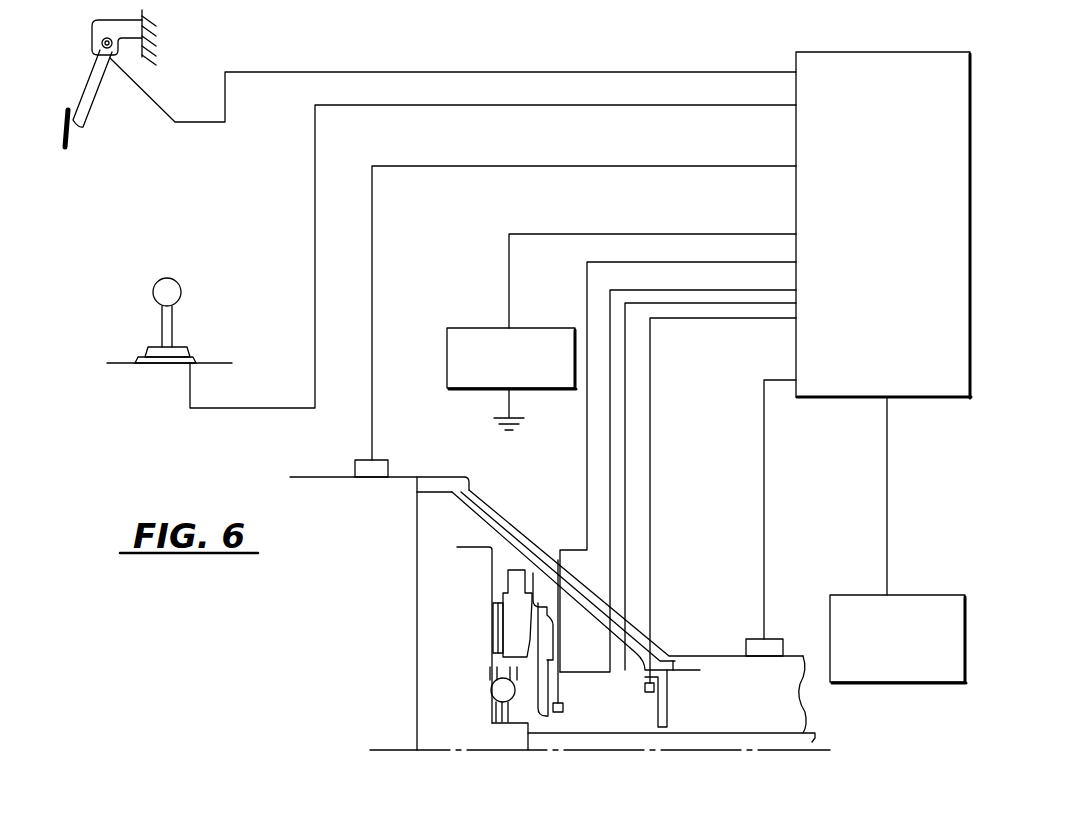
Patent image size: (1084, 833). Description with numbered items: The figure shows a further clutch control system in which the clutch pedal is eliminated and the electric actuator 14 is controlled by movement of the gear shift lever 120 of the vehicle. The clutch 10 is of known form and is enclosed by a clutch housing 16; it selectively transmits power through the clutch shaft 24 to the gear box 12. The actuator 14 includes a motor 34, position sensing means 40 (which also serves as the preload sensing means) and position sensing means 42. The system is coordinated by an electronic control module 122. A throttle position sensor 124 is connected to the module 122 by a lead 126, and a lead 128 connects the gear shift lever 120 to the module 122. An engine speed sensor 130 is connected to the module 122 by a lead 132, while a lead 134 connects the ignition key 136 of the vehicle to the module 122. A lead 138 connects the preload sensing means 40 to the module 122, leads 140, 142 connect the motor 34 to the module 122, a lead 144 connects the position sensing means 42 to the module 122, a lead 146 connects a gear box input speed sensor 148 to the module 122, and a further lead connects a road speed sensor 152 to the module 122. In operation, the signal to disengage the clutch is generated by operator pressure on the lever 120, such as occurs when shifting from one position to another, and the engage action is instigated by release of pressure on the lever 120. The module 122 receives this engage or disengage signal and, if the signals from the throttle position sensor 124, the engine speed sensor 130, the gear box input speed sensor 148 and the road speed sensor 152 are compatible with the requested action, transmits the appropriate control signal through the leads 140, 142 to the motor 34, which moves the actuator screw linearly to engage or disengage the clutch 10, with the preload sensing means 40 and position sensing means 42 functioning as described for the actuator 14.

The clutch 10 is at (586, 643).
The gear box 12 is at (766, 707).
The actuator 14 is at (588, 712).
The clutch housing 16 is at (527, 535).
The clutch shaft 24 is at (777, 740).
The motor 34 is at (577, 683).
The position sensing means 40 is at (565, 707).
The position sensing means 42 is at (643, 687).
The gear shift lever 120 is at (155, 294).
The electronic control module 122 is at (890, 132).
The throttle position sensor 124 is at (95, 30).
The lead 126 is at (627, 72).
The lead 128 is at (506, 106).
The engine speed sensor 130 is at (388, 460).
The lead 132 is at (572, 166).
The lead 134 is at (713, 234).
The ignition key 136 is at (447, 343).
The lead 138 is at (587, 278).
The lead 140 is at (727, 290).
The lead 142 is at (720, 303).
The lead 144 is at (752, 318).
The lead 146 is at (764, 518).
The gear box input speed sensor 148 is at (775, 635).
The road speed sensor 152 is at (918, 595).